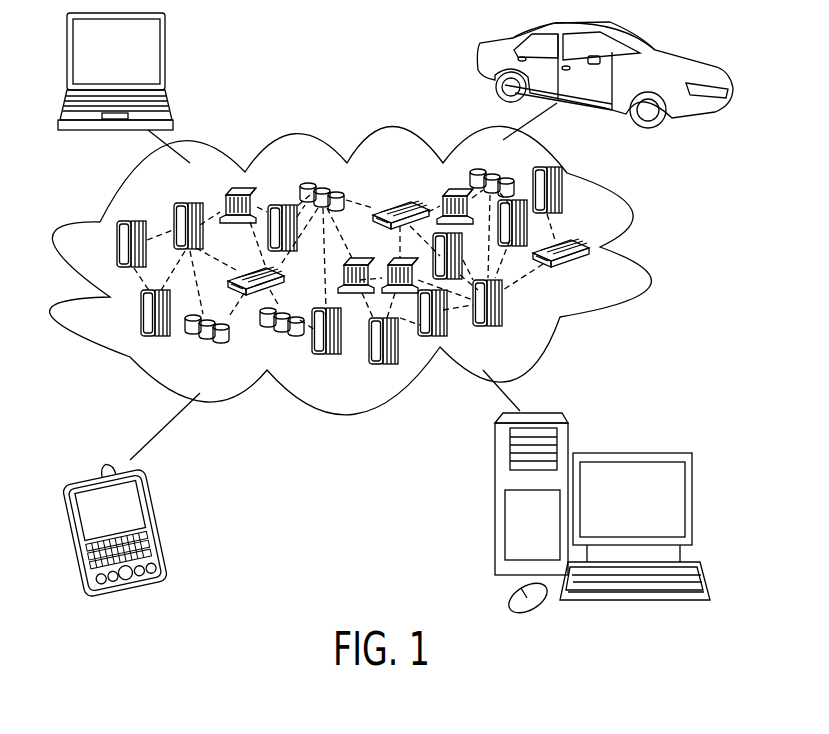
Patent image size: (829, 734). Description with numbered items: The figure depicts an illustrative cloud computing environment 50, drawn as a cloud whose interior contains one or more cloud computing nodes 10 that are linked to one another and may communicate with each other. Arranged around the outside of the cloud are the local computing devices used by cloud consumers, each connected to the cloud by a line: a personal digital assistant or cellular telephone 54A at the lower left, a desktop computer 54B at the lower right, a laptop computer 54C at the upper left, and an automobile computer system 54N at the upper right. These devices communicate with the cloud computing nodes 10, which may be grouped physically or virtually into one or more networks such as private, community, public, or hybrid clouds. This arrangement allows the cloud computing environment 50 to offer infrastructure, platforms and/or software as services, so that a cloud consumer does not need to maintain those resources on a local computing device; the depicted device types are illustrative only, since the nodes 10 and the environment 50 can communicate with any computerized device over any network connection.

The cloud computing node 10 is at (603, 272).
The cloud computing environment 50 is at (633, 250).
The personal digital assistant (PDA) or cellular telephone 54A is at (157, 520).
The desktop computer 54B is at (630, 453).
The laptop computer 54C is at (165, 62).
The automobile computer system 54N is at (478, 72).